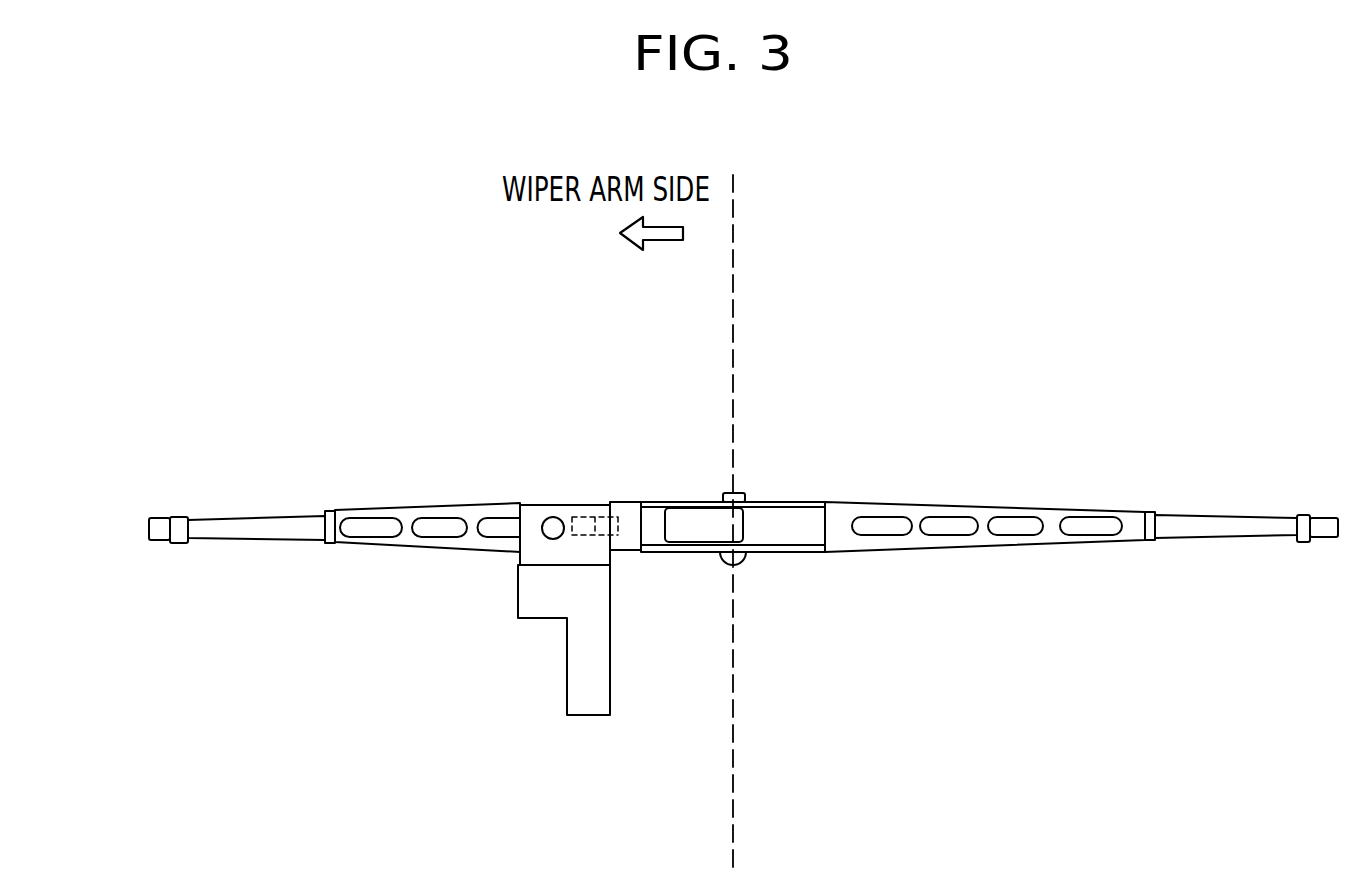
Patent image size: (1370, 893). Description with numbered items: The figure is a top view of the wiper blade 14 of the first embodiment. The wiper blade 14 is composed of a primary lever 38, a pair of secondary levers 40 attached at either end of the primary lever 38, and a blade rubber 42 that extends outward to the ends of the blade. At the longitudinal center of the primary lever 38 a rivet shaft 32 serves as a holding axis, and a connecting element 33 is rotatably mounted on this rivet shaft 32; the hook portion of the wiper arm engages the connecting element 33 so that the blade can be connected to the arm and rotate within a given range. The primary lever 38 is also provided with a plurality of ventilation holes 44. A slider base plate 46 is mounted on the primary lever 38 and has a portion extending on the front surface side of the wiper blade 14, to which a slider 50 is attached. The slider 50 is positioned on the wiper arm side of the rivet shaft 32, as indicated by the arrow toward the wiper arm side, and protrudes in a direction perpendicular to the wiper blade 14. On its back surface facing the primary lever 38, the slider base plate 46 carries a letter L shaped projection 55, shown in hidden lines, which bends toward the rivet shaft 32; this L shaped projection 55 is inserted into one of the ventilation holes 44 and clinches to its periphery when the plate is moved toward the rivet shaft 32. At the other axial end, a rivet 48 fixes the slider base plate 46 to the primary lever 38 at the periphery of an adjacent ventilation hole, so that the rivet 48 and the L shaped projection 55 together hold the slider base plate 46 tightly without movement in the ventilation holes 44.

The wiper blade 14 is at (816, 427).
The rivet shaft 32 is at (742, 493).
The connecting element 33 is at (690, 520).
The primary lever 38 is at (1052, 520).
The secondary levers 40 is at (285, 523).
The blade rubber 42 is at (162, 520).
The ventilation holes 44 is at (385, 525).
The slider base plate 46 is at (592, 510).
The rivet 48 is at (544, 527).
The slider 50 is at (592, 703).
The L shaped projection 55 is at (625, 507).